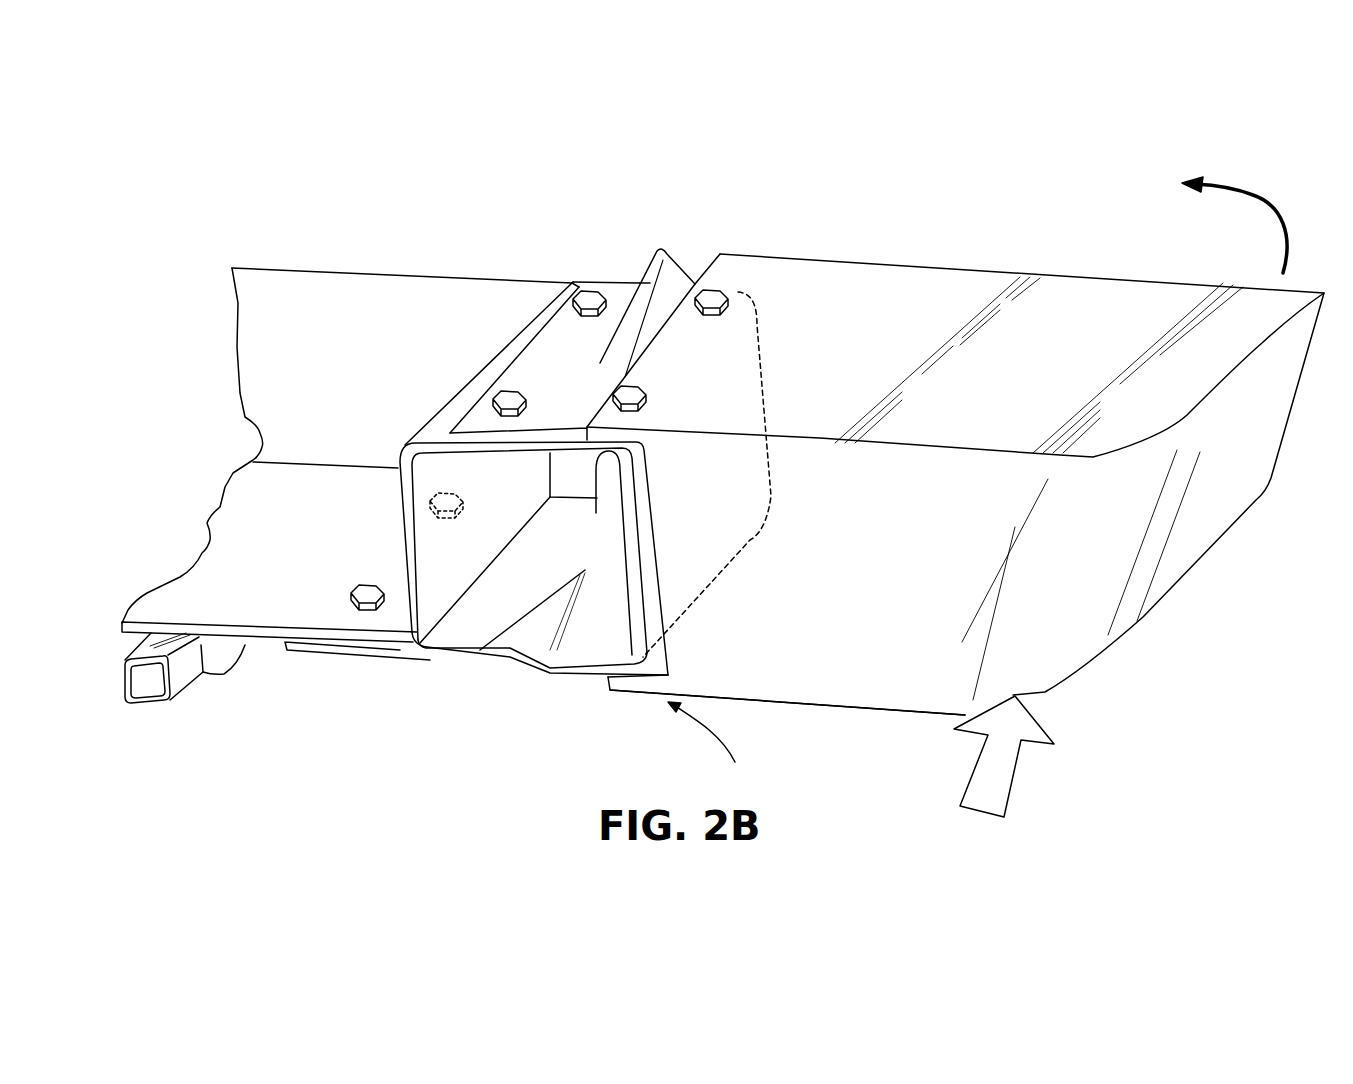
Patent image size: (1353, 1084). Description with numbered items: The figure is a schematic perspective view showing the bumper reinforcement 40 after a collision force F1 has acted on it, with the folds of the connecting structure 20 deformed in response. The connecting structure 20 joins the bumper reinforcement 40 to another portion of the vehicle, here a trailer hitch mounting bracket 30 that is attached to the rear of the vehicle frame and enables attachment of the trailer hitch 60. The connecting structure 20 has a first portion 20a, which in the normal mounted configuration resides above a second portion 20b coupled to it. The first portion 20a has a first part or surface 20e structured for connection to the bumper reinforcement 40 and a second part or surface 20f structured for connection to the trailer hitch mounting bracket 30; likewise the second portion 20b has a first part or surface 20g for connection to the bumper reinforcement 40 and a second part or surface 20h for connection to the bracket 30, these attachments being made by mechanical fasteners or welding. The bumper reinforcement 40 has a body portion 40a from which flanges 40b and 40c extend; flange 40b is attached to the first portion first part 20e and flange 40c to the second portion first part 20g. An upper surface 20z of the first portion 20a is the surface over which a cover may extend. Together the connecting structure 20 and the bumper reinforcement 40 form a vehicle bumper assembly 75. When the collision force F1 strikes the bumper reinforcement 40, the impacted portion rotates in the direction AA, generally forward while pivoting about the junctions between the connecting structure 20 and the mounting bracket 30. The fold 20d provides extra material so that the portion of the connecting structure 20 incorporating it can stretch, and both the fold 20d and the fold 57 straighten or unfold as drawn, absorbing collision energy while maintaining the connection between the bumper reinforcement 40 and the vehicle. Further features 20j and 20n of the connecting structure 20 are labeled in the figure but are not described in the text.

The connecting structure 20 is at (580, 273).
The first portion 20a is at (566, 362).
The second portion 20b is at (477, 643).
The fold 20d is at (510, 657).
The first part or surface of the first portion 20e is at (593, 447).
The second part or surface of the first portion 20f is at (528, 367).
The first part or surface of the second portion 20g is at (615, 652).
The second part or surface of the second portion 20h is at (307, 650).
The bracket side wall 20j is at (405, 652).
The bracket top edge 20n is at (610, 280).
The upper surface 20z is at (562, 360).
The trailer hitch mounting bracket 30 is at (263, 318).
The bumper reinforcement 40 is at (1148, 627).
The body portion 40a is at (797, 302).
The flange 40b is at (672, 337).
The flange 40c is at (627, 692).
The fold 57 is at (669, 274).
The trailer hitch 60 is at (149, 692).
The vehicle bumper assembly 75 is at (708, 744).
The collision force F1 is at (1021, 767).
The direction AA is at (1257, 200).